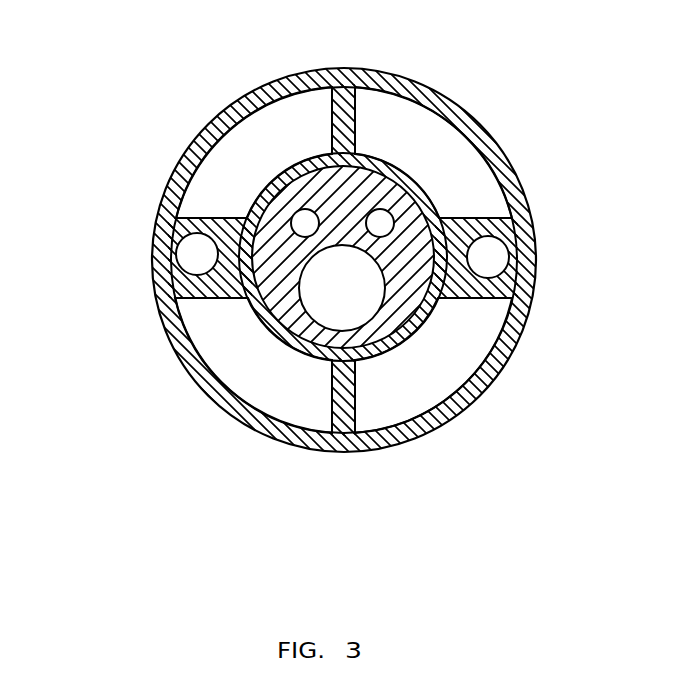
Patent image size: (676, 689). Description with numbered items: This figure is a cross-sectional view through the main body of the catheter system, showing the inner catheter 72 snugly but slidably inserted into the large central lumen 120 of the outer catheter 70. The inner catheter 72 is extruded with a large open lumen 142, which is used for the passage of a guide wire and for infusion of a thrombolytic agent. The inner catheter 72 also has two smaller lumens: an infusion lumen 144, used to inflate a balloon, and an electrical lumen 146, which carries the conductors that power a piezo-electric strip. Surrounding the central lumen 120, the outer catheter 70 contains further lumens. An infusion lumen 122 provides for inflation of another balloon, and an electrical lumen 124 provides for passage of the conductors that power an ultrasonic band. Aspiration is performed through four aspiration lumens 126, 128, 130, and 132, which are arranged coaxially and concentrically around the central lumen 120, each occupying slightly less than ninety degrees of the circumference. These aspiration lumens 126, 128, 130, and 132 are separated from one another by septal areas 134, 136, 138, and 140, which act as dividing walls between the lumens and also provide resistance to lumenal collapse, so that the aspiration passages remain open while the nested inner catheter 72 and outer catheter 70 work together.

The outer catheter 70 is at (422, 82).
The inner catheter 72 is at (407, 283).
The large central lumen 120 is at (460, 219).
The infusion lumen 122 is at (508, 248).
The electrical lumen 124 is at (183, 255).
The aspiration lumen 126 is at (433, 130).
The aspiration lumen 128 is at (298, 115).
The aspiration lumen 130 is at (223, 368).
The aspiration lumen 132 is at (423, 385).
The septal area 134 is at (375, 70).
The septal area 136 is at (318, 440).
The septal area 138 is at (162, 323).
The septal area 140 is at (495, 290).
The large open lumen 142 is at (310, 325).
The infusion lumen 144 is at (402, 228).
The electrical lumen 146 is at (292, 210).